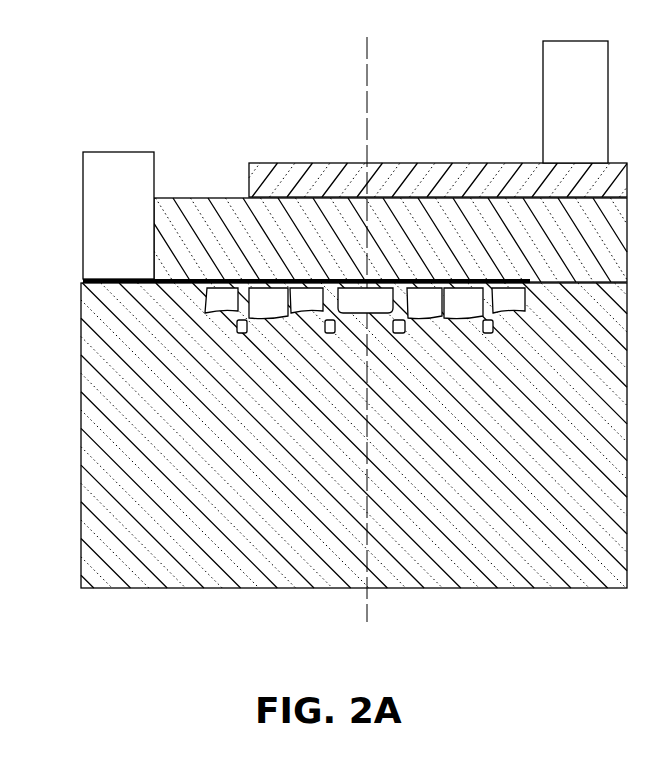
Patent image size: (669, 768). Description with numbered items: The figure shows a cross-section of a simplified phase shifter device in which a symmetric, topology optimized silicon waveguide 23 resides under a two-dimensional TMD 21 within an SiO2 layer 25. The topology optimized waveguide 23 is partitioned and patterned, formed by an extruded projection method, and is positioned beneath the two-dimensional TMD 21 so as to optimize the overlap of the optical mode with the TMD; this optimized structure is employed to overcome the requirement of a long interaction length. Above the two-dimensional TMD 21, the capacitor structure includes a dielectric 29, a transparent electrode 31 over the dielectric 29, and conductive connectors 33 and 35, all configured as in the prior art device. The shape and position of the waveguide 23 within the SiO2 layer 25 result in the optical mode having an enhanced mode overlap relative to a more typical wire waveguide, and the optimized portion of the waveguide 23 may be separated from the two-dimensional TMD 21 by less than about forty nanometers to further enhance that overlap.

The 2D TMD 21 is at (83, 280).
The topology optimized waveguide 23 is at (207, 300).
The SiO2 layer 25 is at (95, 416).
The dielectric 29 is at (203, 205).
The transparent electrode 31 is at (250, 180).
The conductive connector 33 is at (97, 215).
The conductive connector 35 is at (550, 100).